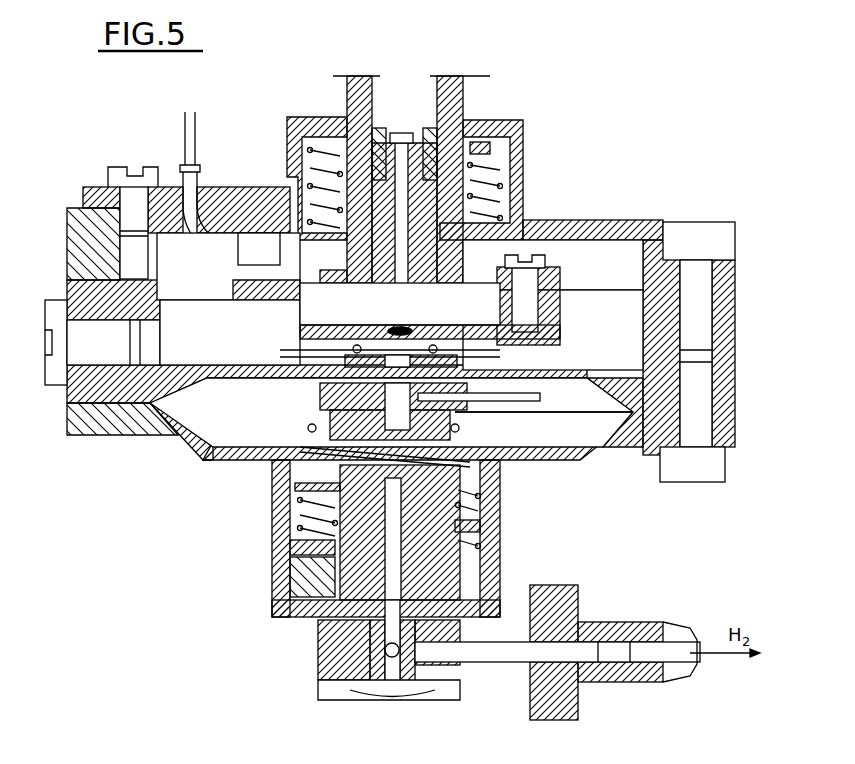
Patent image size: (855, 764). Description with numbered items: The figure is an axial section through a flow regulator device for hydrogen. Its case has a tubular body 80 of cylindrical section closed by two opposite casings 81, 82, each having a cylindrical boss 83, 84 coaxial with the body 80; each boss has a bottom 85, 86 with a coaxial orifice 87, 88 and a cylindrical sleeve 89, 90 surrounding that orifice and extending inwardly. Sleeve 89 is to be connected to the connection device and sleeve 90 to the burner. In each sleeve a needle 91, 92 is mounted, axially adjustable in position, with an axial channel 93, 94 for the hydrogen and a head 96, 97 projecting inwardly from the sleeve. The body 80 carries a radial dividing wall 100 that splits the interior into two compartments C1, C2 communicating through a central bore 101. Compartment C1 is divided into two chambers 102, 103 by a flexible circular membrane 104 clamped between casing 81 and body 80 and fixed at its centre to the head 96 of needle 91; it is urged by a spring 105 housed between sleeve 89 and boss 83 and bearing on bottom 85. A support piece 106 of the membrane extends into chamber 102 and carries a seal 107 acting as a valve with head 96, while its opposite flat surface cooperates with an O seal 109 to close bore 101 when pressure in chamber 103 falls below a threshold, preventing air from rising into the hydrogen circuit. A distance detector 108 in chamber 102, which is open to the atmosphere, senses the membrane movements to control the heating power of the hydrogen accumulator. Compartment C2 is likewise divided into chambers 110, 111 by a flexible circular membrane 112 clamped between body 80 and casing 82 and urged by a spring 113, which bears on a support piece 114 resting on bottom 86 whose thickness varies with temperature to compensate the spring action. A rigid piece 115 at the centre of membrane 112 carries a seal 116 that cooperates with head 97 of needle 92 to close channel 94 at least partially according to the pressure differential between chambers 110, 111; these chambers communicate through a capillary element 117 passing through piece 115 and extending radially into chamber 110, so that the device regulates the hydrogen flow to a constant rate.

The tubular body 80 is at (722, 342).
The casing 81 is at (600, 220).
The casing 82 is at (605, 450).
The cylindrical boss 83 is at (517, 165).
The cylindrical boss 84 is at (490, 520).
The bottom 85 is at (308, 122).
The bottom 86 is at (288, 618).
The coaxial orifice 87 is at (420, 108).
The coaxial orifice 88 is at (335, 628).
The cylindrical sleeve 89 is at (490, 147).
The cylindrical sleeve 90 is at (347, 547).
The needle 91 is at (447, 230).
The needle 92 is at (485, 552).
The axial channel 93 is at (403, 178).
The axial channel 94 is at (480, 495).
The head 96 is at (375, 303).
The head 97 is at (310, 482).
The radial dividing wall 100 is at (565, 372).
The central bore 101 is at (345, 383).
The chamber 102 is at (628, 272).
The chamber 103 is at (628, 322).
The flexible circular membrane 104 is at (210, 285).
The spring 105 is at (322, 205).
The support piece 106 is at (235, 312).
The seal 107 is at (412, 325).
The distance detector 108 is at (278, 260).
The O seal 109 is at (285, 357).
The chamber 110 is at (590, 406).
The chamber 111 is at (590, 441).
The flexible circular membrane 112 is at (177, 432).
The spring 113 is at (312, 494).
The support piece 114 is at (300, 578).
The rigid piece 115 is at (308, 416).
The seal 116 is at (290, 468).
The capillary element 117 is at (515, 402).
The compartment C1 is at (192, 356).
The compartment C2 is at (237, 401).